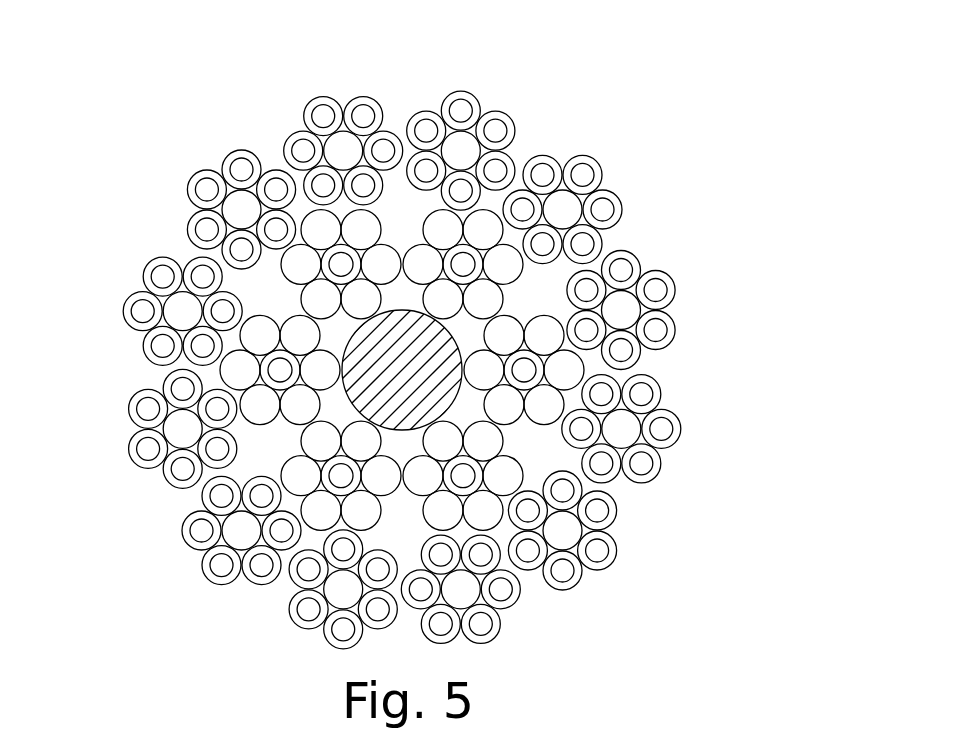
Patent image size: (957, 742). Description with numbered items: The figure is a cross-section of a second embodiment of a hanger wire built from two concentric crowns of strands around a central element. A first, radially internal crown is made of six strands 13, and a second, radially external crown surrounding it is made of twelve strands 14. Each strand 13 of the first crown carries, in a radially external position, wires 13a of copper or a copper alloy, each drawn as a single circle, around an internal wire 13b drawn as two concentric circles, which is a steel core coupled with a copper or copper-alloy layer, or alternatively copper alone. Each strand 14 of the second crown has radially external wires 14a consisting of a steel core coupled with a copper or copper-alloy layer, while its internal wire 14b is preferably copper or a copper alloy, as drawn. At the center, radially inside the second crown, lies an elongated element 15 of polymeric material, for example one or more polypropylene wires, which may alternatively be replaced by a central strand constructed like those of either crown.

The strand of the first crown 13 is at (184, 421).
The radially external wire of first-crown strand 13a is at (228, 373).
The internal wire of first-crown strand 13b is at (280, 368).
The strand of the second crown 14 is at (683, 251).
The radially external wire of second-crown strand 14a is at (670, 332).
The internal wire of second-crown strand 14b is at (617, 303).
The elongated element 15 is at (447, 405).